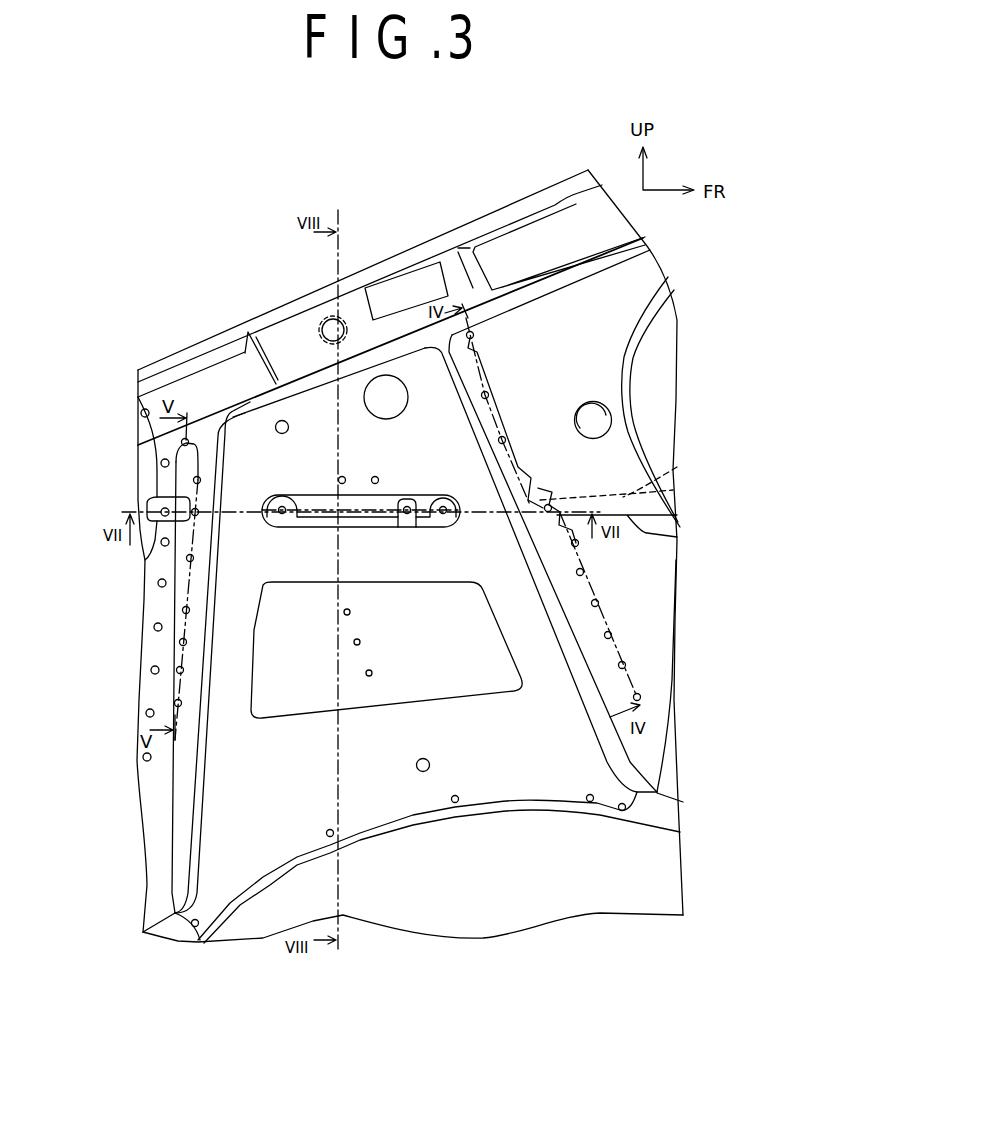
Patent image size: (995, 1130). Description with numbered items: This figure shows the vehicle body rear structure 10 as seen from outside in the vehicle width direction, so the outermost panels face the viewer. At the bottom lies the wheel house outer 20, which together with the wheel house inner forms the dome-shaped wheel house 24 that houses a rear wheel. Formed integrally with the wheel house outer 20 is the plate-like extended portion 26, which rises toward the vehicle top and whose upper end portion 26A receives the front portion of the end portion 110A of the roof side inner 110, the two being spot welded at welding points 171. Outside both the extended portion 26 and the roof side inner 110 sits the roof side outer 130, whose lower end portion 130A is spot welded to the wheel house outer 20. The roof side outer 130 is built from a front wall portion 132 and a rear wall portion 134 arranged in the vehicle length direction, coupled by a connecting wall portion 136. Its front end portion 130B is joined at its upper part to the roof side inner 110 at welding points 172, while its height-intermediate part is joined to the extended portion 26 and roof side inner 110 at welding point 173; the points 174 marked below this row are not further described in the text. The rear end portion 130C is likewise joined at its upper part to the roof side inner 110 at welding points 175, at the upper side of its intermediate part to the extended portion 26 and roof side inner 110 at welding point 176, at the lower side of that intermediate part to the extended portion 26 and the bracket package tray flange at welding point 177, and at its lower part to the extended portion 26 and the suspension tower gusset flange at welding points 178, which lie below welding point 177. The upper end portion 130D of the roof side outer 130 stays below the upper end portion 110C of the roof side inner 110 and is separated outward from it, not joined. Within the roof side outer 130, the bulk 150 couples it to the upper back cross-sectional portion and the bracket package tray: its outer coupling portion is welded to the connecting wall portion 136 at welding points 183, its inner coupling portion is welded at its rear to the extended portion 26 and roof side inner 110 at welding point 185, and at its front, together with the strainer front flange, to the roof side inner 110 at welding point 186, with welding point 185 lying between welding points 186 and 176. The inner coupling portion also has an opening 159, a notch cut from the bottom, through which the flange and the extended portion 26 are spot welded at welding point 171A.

The vehicle body rear structure 10 is at (347, 181).
The wheel house outer 20 is at (511, 927).
The wheel house 24 is at (413, 946).
The extended portion 26 is at (653, 622).
The upper end portion of the extended portion 26A is at (675, 402).
The roof side inner 110 is at (452, 216).
The end portion of the roof side inner 110A is at (677, 537).
The upper end portion of the roof side inner 110C is at (390, 258).
The roof side outer 130 is at (318, 353).
The lower end portion of the roof side outer 130A is at (411, 814).
The front end portion of the roof side outer 130B is at (520, 490).
The rear end portion of the roof side outer 130C is at (178, 603).
The upper end portion of the roof side outer 130D is at (248, 332).
The front wall portion 132 is at (493, 463).
The rear wall portion 134 is at (213, 582).
The connecting wall portion 136 is at (407, 584).
The bulk 150 is at (303, 495).
The opening 159 is at (407, 503).
The welding points 171 is at (407, 517).
The welding point 171A is at (458, 548).
The welding points 172 is at (504, 440).
The welding point 173 is at (552, 498).
The rivets 174 is at (627, 665).
The welding points 175 is at (155, 477).
The welding point 176 is at (180, 493).
The welding point 177 is at (186, 558).
The welding points 178 is at (174, 702).
The welding points 183 is at (375, 476).
The welding point 185 is at (279, 507).
The welding point 186 is at (443, 506).